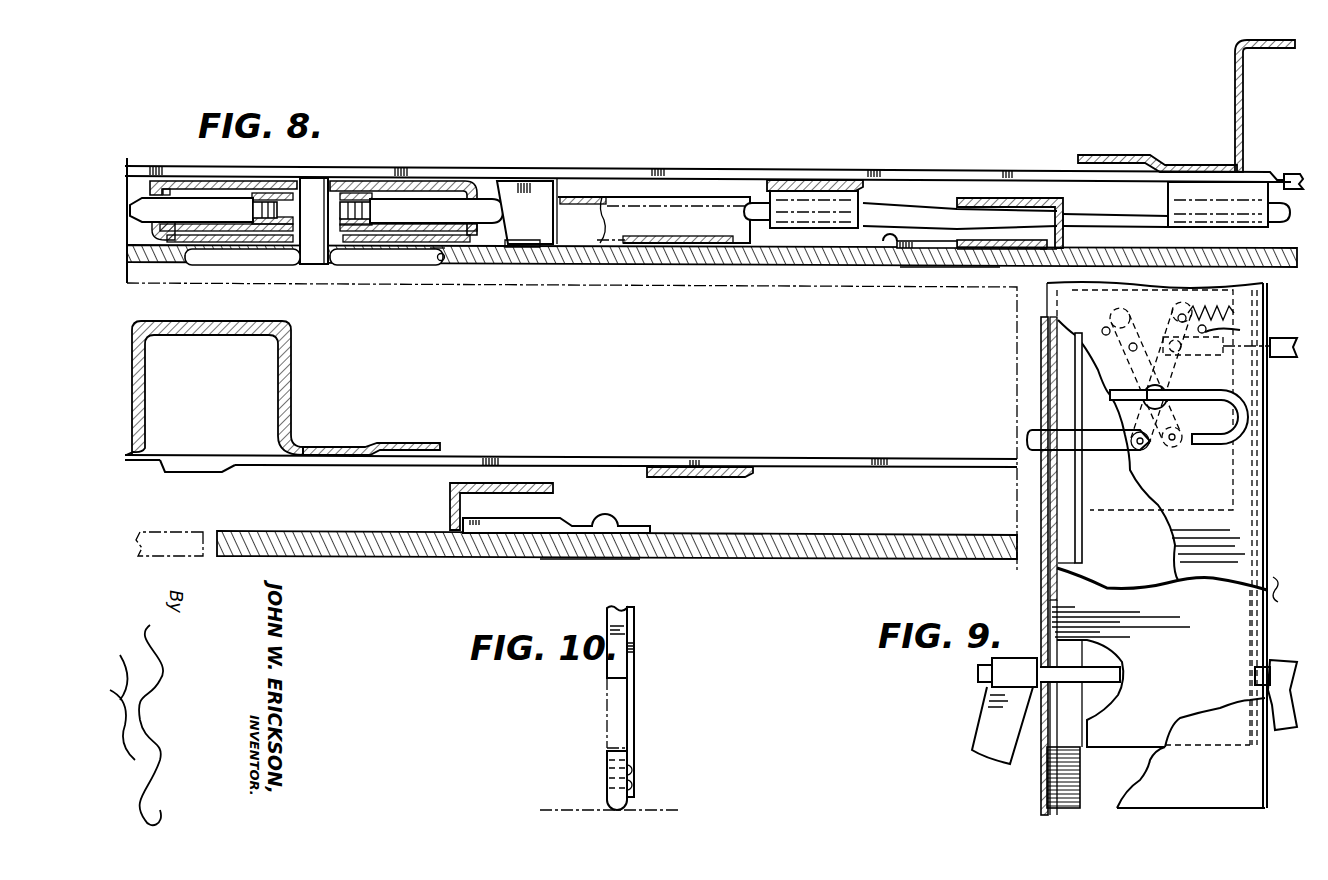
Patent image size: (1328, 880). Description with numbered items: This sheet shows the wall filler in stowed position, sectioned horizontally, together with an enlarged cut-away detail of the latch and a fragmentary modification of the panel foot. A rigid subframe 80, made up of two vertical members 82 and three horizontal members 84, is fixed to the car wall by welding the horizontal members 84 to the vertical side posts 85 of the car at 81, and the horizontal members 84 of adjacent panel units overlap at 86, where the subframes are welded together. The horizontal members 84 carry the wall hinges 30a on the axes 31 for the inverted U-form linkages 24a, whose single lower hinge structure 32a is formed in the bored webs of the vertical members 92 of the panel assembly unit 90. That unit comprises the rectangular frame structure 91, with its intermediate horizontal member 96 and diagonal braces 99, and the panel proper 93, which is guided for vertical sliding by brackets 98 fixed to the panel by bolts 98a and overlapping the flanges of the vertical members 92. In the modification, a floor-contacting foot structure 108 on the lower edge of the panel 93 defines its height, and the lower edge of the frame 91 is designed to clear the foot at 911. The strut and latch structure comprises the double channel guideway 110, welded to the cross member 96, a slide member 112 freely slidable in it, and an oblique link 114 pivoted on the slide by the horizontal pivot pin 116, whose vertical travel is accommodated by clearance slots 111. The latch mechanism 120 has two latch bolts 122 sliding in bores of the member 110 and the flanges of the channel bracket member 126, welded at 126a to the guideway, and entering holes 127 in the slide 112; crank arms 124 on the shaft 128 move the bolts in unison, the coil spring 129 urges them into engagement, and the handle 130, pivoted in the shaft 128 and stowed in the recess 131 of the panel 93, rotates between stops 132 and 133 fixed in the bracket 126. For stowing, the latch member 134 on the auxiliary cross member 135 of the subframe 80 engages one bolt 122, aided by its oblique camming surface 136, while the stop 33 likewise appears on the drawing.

In FIG. 8, the linkages 24a is at (915, 217).
In FIG. 8, the hinge structures 30a is at (767, 222).
In FIG. 8, the hinge axes 31 is at (745, 213).
In FIG. 8, the hinge structures 32a is at (1005, 250).
In FIG. 8, the stop 33 is at (1072, 226).
In FIG. 8, the subframe 80 is at (722, 188).
In FIG. 8, the weld 81 is at (1187, 164).
In FIG. 8, the vertical members 82 is at (846, 182).
In FIG. 8, the horizontal members 84 is at (990, 177).
In FIG. 8, the vertical side posts 85 is at (1235, 93).
In FIG. 8, the overlap 86 is at (1290, 173).
In FIG. 8, the panel assembly unit 90 is at (962, 268).
In FIG. 10, the panel assembly unit 90 is at (606, 676).
In FIG. 8, the frame structure 91 is at (1047, 252).
In FIG. 10, the frame structure 91 is at (617, 662).
In FIG. 8, the vertical members 92 is at (1033, 198).
In FIG. 8, the panel proper 93 is at (647, 267).
In FIG. 10, the panel proper 93 is at (636, 733).
In FIG. 8, the intermediate horizontal member 96 is at (645, 206).
In FIG. 8, the brackets 98 is at (916, 247).
In FIG. 8, the bolts 98a is at (887, 241).
In FIG. 8, the diagonal braces 99 is at (983, 250).
In FIG. 10, the foot structure 108 is at (612, 794).
In FIG. 8, the double channel member 110 is at (438, 259).
In FIG. 9, the double channel member 110 is at (1040, 798).
In FIG. 9, the clearance slots 111 is at (1040, 758).
In FIG. 8, the slide member 112 is at (266, 238).
In FIG. 9, the slide member 112 is at (1153, 728).
In FIG. 9, the oblique link 114 is at (990, 722).
In FIG. 9, the horizontal pivot pin 116 is at (980, 673).
In FIG. 8, the latch mechanism 120 is at (400, 263).
In FIG. 9, the latch mechanism 120 is at (1129, 403).
In FIG. 8, the latch bolts 122 is at (226, 221).
In FIG. 9, the latch bolts 122 is at (1210, 357).
In FIG. 8, the crank arms 124 is at (352, 200).
In FIG. 8, the channel bracket member 126 is at (410, 184).
In FIG. 9, the channel bracket member 126 is at (1110, 392).
In FIG. 8, the weld 126a is at (290, 185).
In FIG. 8, the holes 127 is at (175, 252).
In FIG. 9, the holes 127 is at (1042, 405).
In FIG. 8, the shaft 128 is at (320, 267).
In FIG. 9, the shaft 128 is at (1165, 405).
In FIG. 9, the coil spring 129 is at (1233, 310).
In FIG. 8, the handle 130 is at (383, 260).
In FIG. 9, the handle 130 is at (1207, 445).
In FIG. 8, the recess 131 is at (445, 269).
In FIG. 9, the stop 132 is at (1100, 316).
In FIG. 9, the stop 133 is at (1217, 332).
In FIG. 8, the latch member 134 is at (541, 183).
In FIG. 9, the latch member 134 is at (1289, 358).
In FIG. 8, the auxiliary cross member 135 is at (598, 169).
In FIG. 8, the oblique camming surface 136 is at (532, 250).
In FIG. 10, the web 911 is at (608, 738).